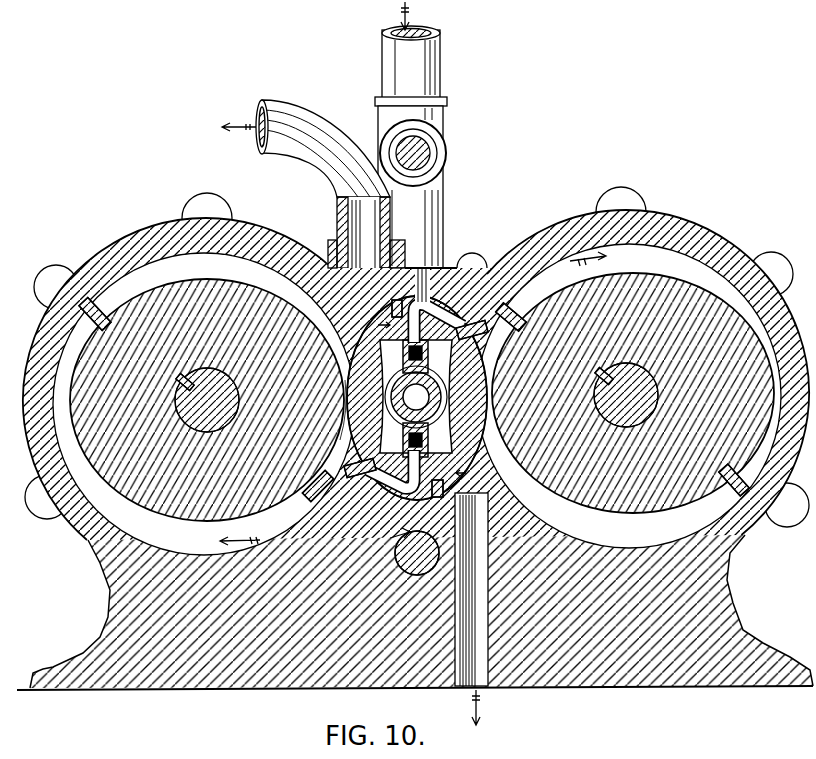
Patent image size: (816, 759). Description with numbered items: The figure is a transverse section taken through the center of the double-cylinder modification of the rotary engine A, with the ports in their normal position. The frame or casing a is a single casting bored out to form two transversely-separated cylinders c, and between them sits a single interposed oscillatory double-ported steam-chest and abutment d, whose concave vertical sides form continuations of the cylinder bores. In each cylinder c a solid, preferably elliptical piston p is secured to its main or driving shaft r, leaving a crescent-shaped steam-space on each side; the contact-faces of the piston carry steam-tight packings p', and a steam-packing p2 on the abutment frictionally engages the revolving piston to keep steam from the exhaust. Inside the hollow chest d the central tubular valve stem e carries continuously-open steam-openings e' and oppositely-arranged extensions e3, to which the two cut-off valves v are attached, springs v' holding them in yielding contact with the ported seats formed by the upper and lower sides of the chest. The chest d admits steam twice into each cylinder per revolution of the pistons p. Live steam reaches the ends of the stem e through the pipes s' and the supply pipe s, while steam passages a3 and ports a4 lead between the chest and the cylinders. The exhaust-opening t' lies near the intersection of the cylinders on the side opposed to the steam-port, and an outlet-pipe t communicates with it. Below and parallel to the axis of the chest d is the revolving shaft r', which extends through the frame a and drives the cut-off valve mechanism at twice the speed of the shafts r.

The rotary engine A is at (416, 370).
The frame or casing a is at (108, 597).
The cylinder c is at (417, 399).
The piston p is at (422, 388).
The steam-tight packings p' is at (397, 396).
The steam-packing p2 is at (418, 400).
The main or driving shaft r is at (405, 386).
The revolving shaft r' is at (486, 539).
The supply pipe s is at (422, 50).
The live-steam pipes s' is at (419, 182).
The outlet-pipe t is at (306, 200).
The exhaust-opening t' is at (400, 507).
The steam-chest and abutment d is at (360, 352).
The tubular valve stem e is at (442, 398).
The steam-passage e' is at (416, 397).
The short arm e3 is at (405, 363).
The cut-off valve v is at (406, 398).
The auxiliary springs v' is at (428, 351).
The steam passages a3 is at (442, 470).
The ports a4 is at (442, 494).